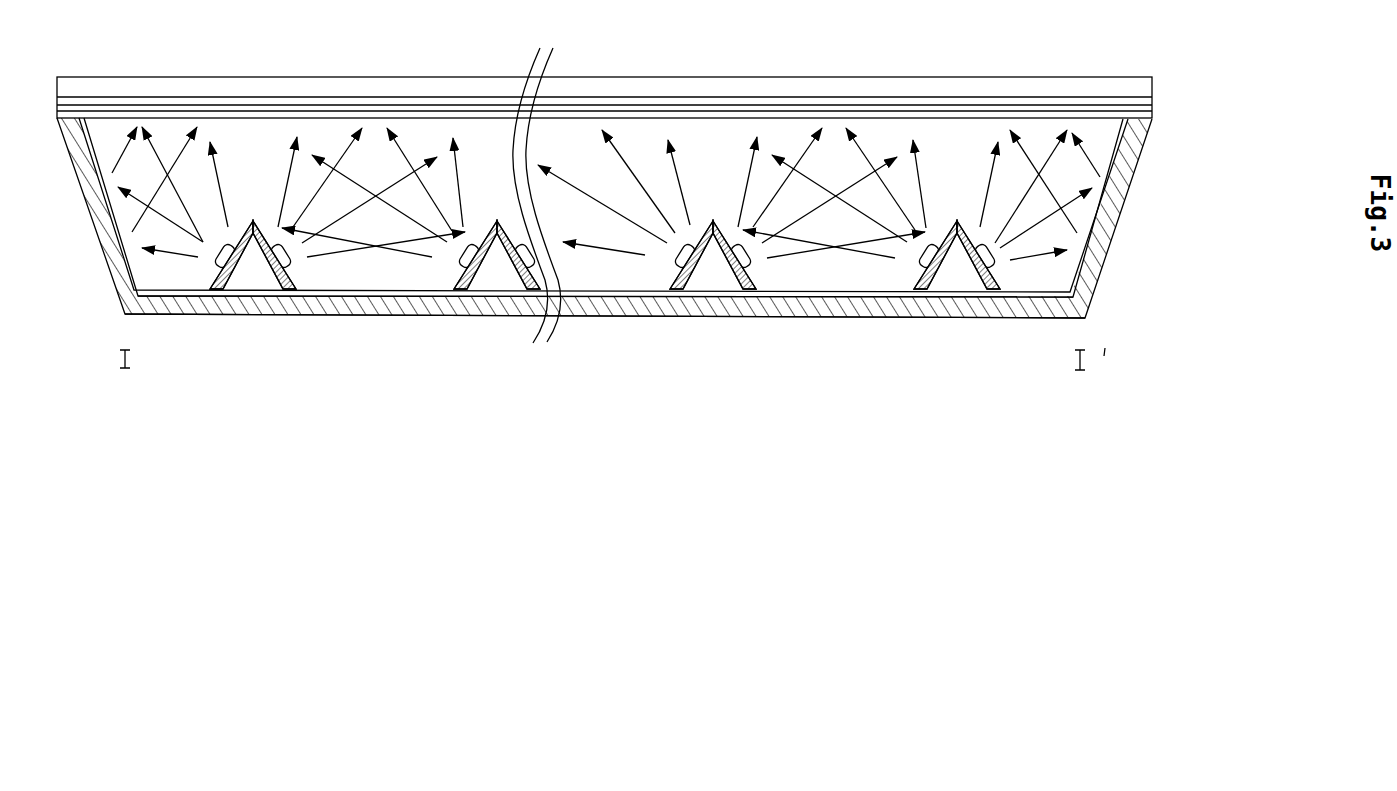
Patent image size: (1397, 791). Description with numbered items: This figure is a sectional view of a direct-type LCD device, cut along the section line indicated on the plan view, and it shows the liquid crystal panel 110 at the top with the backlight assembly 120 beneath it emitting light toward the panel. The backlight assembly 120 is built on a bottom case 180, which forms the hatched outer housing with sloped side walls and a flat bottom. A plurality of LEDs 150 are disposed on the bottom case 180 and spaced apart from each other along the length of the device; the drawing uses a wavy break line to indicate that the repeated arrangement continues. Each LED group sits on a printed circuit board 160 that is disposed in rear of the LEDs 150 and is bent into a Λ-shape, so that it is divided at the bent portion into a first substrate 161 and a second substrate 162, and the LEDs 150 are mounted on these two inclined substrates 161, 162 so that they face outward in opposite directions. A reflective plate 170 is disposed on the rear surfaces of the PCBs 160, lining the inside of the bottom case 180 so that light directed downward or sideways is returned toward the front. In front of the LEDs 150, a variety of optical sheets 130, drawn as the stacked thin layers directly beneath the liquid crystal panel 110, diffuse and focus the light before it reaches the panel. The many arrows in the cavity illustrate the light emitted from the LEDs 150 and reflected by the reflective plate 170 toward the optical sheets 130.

The liquid crystal panel 110 is at (1147, 92).
The backlight assembly 120 is at (1240, 112).
The optical sheets 130 is at (1158, 100).
The LEDs 150 is at (996, 256).
The printed circuit board 160 is at (1172, 295).
The first substrate 161 is at (1068, 301).
The second substrate 162 is at (975, 262).
The reflective plate 170 is at (1115, 178).
The bottom case 180 is at (1138, 147).